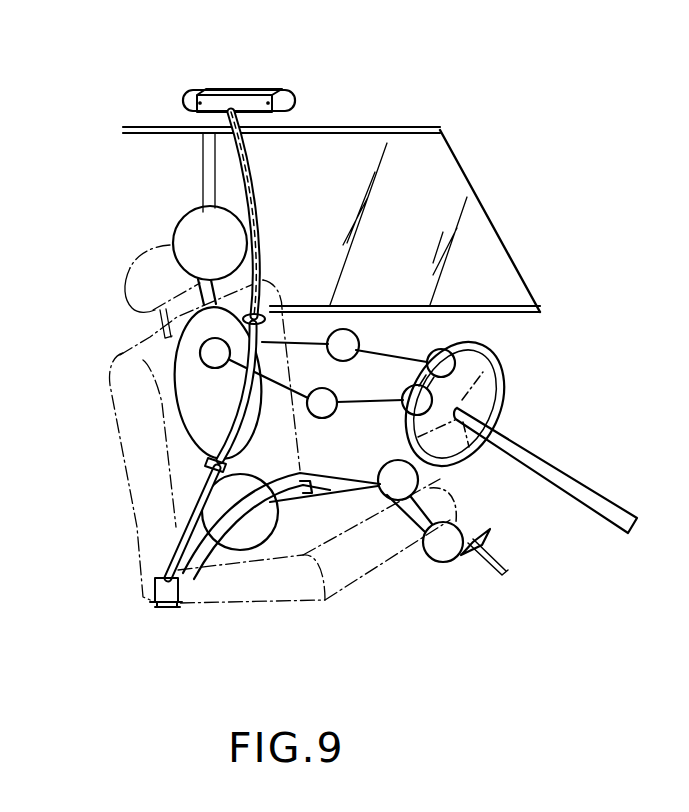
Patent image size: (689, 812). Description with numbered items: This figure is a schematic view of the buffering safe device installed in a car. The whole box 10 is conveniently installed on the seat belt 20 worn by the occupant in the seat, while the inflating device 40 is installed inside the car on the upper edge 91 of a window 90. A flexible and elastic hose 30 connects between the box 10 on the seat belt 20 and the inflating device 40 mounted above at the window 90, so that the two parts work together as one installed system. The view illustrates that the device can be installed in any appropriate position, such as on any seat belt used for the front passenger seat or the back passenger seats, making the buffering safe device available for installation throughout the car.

The box 10 is at (222, 434).
The seat belt 20 is at (183, 570).
The flexible and elastic hose 30 is at (248, 192).
The inflating device 40 is at (240, 100).
The window 90 is at (485, 273).
The upper edge 91 is at (337, 111).